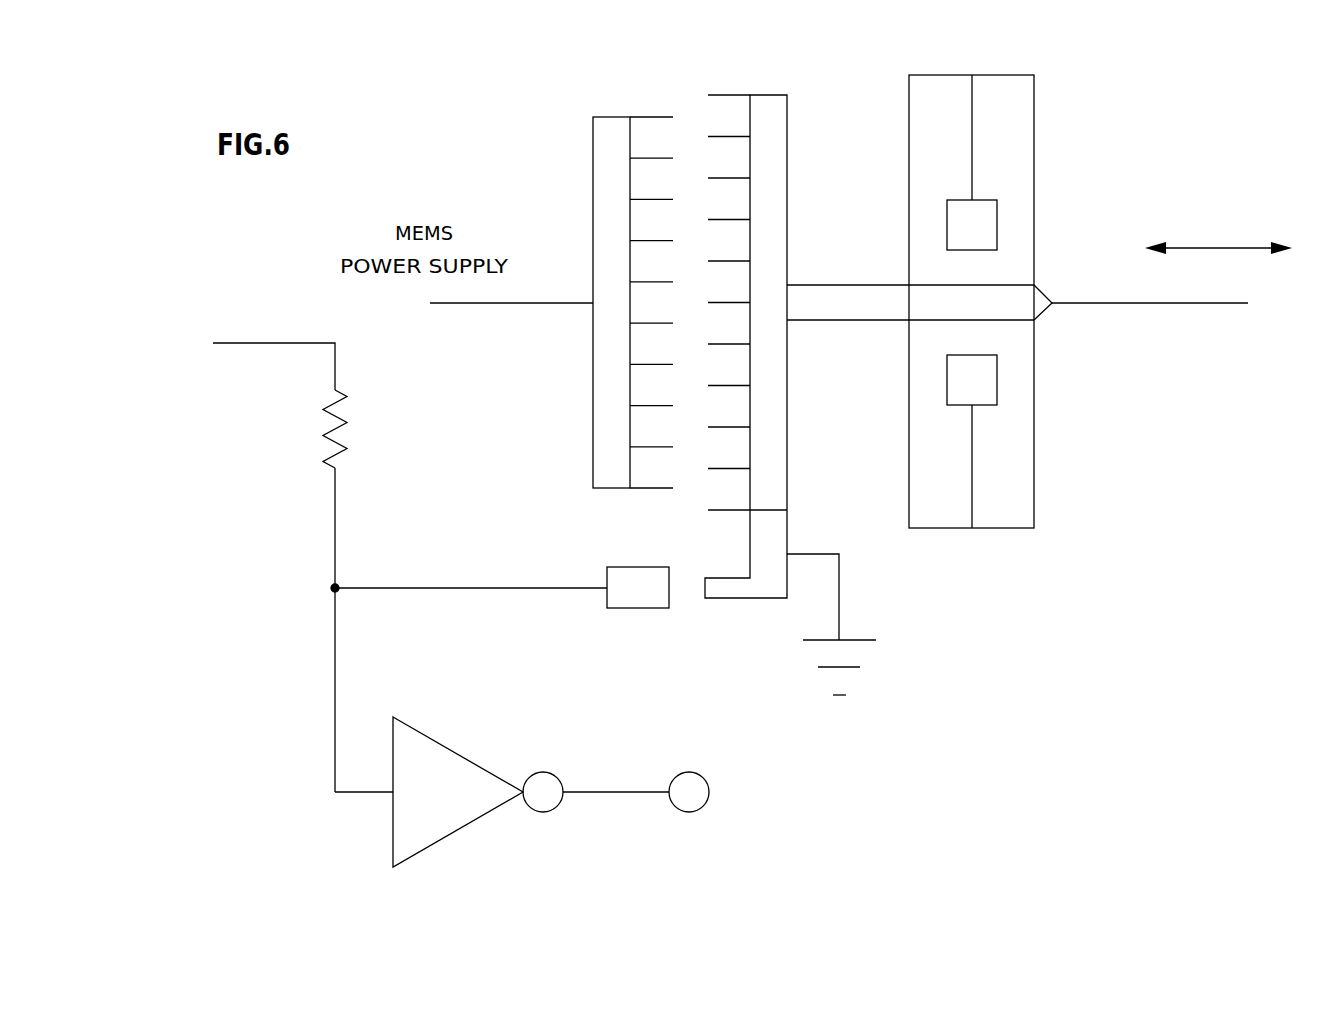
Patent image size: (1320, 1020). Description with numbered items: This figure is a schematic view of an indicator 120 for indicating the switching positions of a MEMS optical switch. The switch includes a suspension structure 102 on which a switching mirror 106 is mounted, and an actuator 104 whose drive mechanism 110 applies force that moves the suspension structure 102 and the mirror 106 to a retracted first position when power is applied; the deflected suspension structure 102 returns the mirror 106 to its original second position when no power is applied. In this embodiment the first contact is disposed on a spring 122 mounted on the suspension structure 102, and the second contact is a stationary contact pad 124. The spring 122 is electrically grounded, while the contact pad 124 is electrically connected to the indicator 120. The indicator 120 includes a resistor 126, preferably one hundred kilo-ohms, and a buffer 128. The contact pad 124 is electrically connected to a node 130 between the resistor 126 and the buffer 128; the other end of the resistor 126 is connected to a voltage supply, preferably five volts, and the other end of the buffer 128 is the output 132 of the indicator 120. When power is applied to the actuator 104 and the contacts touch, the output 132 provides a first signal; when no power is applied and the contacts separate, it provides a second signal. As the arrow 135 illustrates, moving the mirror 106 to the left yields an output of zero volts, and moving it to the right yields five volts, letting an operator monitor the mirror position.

The suspension structure 102 is at (778, 143).
The actuator 104 is at (552, 182).
The switching mirror 106 is at (1200, 303).
The drive mechanism 110 is at (720, 93).
The indicator 120 is at (290, 757).
The spring 122 is at (745, 598).
The stationary contact pad 124 is at (489, 597).
The resistor R0 126 is at (345, 413).
The buffer 128 is at (460, 832).
The node 130 is at (335, 588).
The output 132 is at (703, 805).
The arrow 135 is at (1220, 235).